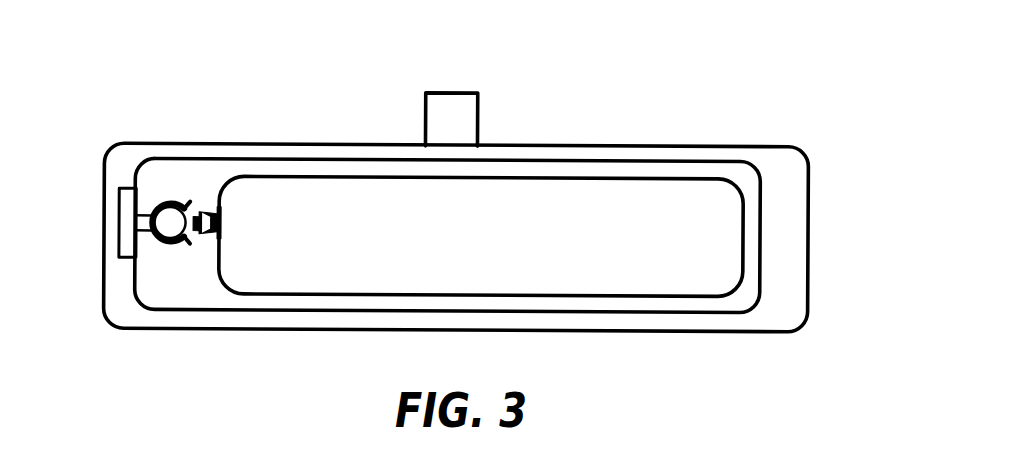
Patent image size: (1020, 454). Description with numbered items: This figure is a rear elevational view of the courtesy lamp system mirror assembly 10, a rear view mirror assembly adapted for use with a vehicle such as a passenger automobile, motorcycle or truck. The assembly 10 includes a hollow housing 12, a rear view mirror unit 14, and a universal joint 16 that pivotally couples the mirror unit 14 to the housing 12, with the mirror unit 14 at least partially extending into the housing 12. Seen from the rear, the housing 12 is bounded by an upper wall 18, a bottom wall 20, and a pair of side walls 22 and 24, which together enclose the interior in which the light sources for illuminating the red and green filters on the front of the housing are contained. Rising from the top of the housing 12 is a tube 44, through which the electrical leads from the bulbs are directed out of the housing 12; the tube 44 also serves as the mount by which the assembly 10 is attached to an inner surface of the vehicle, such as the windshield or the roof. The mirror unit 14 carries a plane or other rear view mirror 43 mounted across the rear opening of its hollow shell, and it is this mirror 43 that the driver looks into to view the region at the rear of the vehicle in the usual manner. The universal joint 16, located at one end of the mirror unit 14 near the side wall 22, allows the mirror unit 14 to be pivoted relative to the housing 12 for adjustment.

The courtesy lamp system mirror assembly 10 is at (550, 128).
The hollow housing 12 is at (628, 142).
The rear view mirror unit 14 is at (328, 177).
The universal joint 16 is at (167, 193).
The upper wall 18 is at (267, 155).
The bottom wall 20 is at (658, 318).
The side wall 22 is at (128, 298).
The side wall 24 is at (765, 177).
The rear view mirror 43 is at (640, 220).
The tube 44 is at (453, 127).